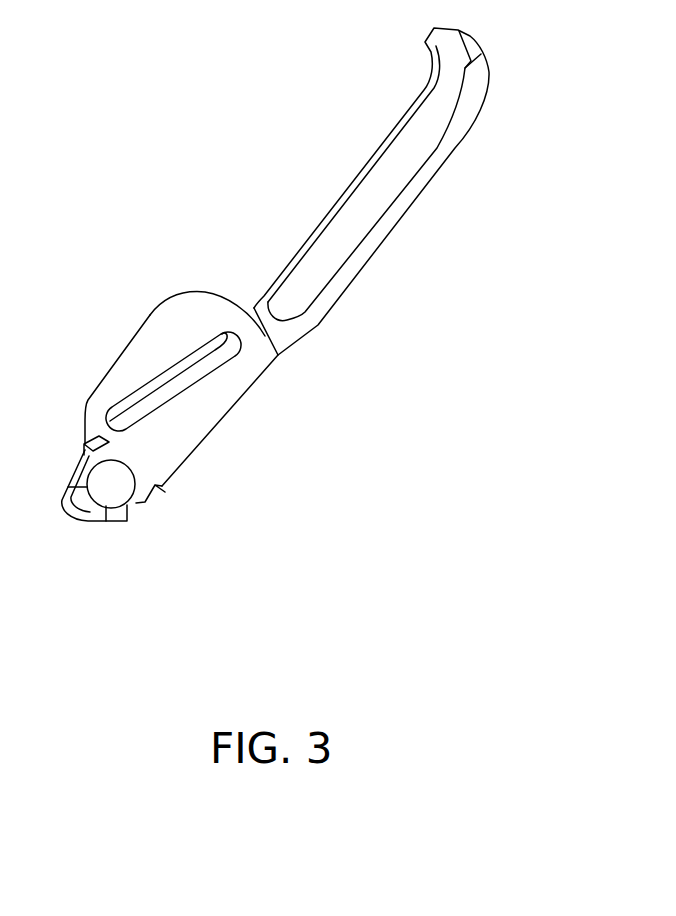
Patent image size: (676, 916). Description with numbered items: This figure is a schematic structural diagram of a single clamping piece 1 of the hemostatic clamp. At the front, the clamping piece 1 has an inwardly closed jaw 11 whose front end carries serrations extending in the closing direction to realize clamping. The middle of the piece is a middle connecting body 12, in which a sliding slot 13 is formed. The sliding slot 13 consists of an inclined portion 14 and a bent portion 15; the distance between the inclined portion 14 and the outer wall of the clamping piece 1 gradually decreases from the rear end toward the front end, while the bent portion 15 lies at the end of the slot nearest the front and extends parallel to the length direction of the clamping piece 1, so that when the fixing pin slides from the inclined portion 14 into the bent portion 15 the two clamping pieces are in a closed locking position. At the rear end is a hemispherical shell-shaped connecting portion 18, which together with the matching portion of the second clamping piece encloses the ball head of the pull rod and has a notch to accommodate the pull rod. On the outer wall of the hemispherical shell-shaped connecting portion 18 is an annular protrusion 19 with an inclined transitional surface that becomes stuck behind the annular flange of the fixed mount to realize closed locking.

The clamping piece 1 is at (284, 303).
The jaw 11 is at (397, 177).
The middle connecting body 12 is at (222, 395).
The sliding slot 13 is at (152, 281).
The inclined portion 14 is at (142, 390).
The bent portion 15 is at (213, 342).
The hemispherical shell-shaped connecting portion 18 is at (112, 485).
The annular protrusion 19 is at (150, 500).